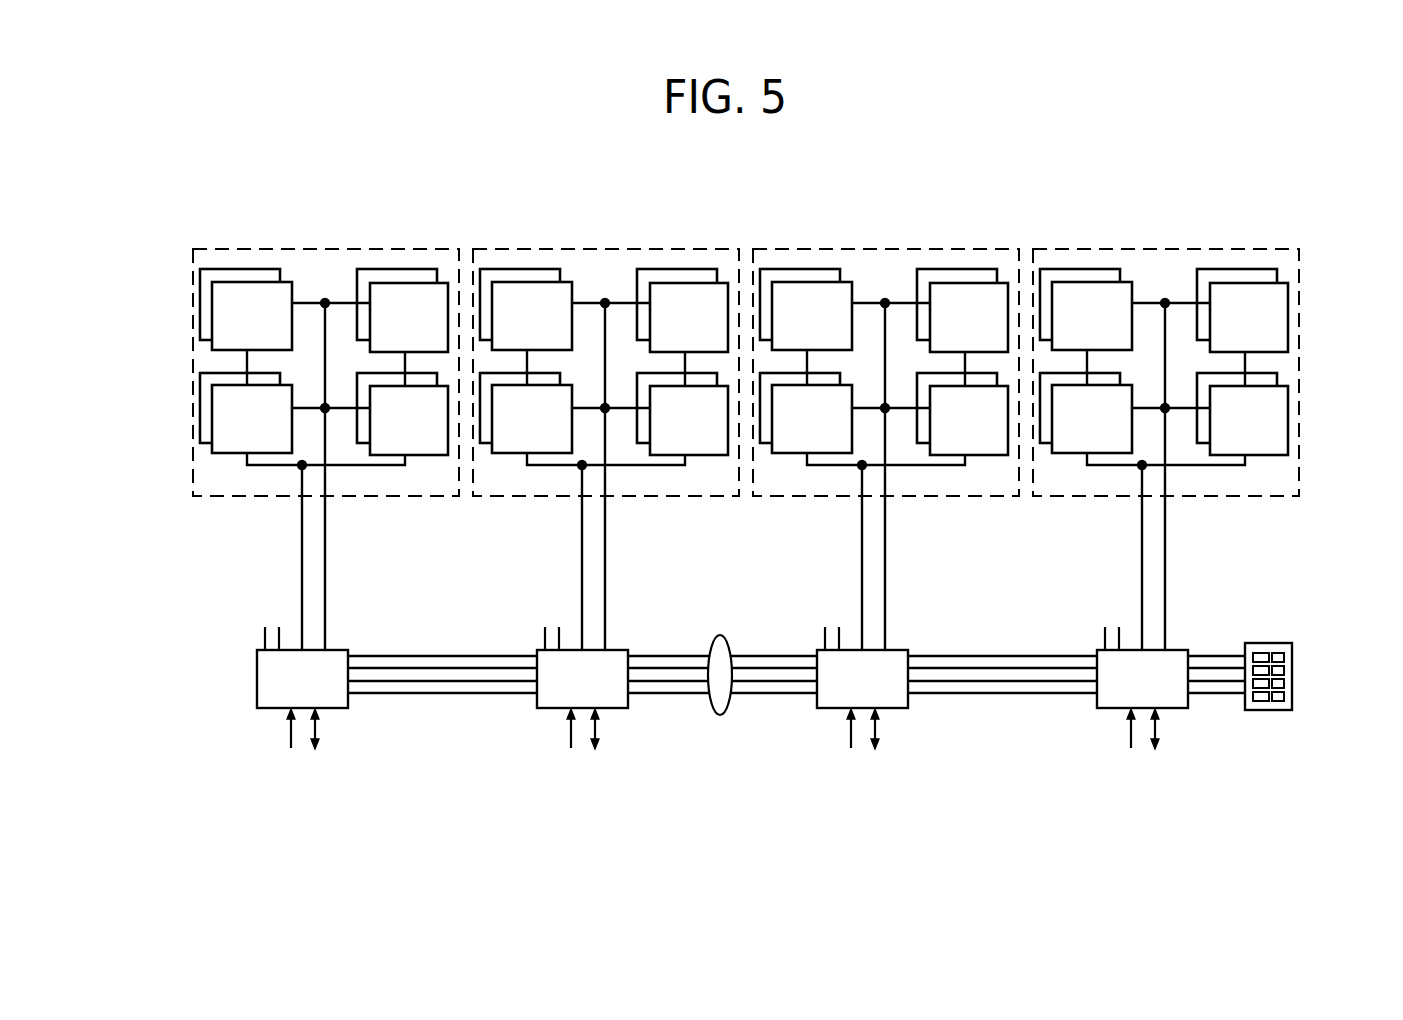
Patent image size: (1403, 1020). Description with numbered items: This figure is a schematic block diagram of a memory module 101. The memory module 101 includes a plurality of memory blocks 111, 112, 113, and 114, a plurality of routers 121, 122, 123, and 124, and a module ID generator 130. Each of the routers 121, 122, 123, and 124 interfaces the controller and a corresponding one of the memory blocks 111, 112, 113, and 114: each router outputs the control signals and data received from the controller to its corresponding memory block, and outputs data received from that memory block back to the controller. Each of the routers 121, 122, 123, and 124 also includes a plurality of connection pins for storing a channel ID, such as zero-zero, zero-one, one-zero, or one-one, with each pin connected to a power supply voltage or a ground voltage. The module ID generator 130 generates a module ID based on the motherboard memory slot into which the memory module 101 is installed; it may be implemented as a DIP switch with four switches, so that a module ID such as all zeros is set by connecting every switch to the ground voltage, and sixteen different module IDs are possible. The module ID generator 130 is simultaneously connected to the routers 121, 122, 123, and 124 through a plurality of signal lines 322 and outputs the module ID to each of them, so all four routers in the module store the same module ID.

The memory module 101 is at (1318, 182).
The memory block 111 is at (328, 249).
The memory block 112 is at (606, 423).
The memory block 113 is at (886, 423).
The memory block 114 is at (1166, 423).
The router 121 is at (340, 648).
The router 122 is at (598, 675).
The router 123 is at (878, 675).
The router 124 is at (1158, 675).
The module ID generator 130 is at (1268, 712).
The signal lines 322 is at (720, 635).